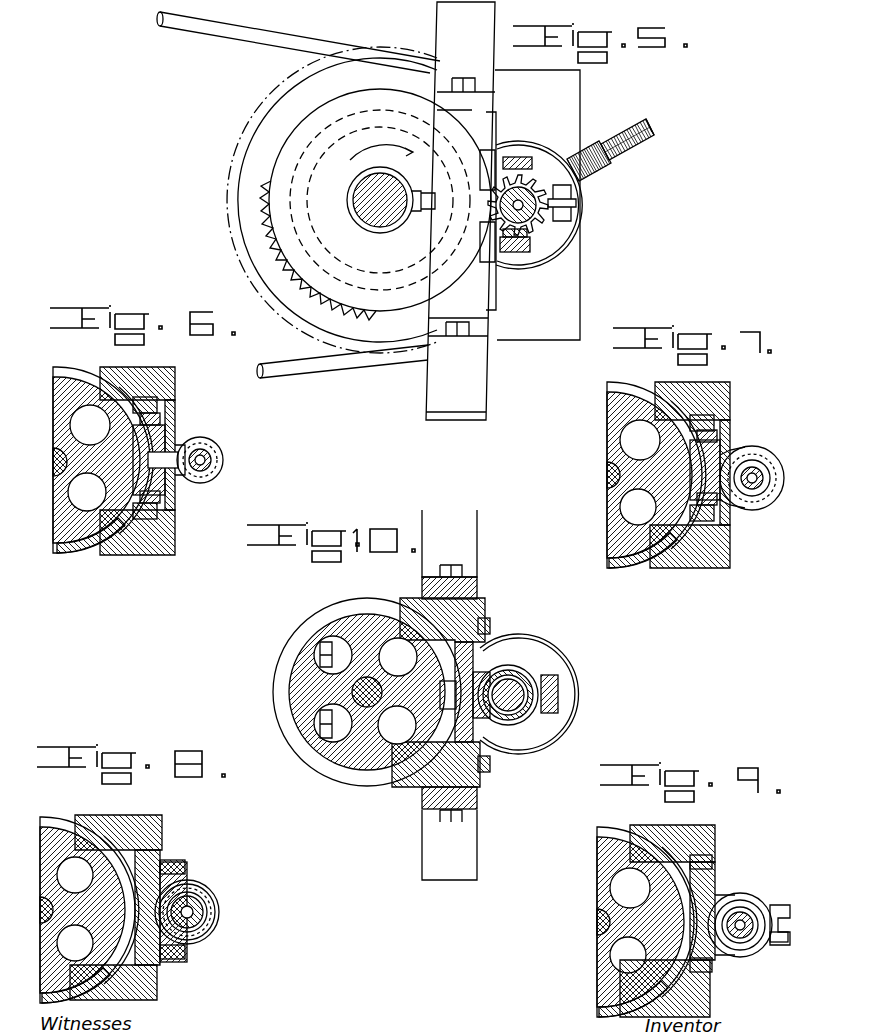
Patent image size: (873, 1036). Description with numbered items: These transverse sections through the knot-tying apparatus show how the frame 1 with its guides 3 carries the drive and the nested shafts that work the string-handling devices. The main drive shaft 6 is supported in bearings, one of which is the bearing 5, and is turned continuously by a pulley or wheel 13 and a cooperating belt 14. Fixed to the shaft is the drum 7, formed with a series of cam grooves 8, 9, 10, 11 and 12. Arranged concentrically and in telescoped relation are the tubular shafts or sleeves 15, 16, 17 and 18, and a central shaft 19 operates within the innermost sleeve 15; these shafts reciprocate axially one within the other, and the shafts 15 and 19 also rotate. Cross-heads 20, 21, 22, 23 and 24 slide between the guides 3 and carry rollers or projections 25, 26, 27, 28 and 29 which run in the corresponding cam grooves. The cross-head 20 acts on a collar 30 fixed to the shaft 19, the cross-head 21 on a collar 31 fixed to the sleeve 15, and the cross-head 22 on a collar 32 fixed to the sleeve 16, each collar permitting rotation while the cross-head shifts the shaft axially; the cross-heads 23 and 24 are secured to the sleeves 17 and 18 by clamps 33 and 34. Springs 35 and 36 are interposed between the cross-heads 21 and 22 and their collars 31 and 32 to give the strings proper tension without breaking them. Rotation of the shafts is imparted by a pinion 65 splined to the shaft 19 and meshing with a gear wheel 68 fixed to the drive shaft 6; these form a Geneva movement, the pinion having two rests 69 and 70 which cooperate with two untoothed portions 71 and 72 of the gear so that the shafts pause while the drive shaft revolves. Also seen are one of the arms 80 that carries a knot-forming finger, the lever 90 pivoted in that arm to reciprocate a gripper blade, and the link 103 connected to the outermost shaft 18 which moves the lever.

In FIG. 5, the frame 1 is at (482, 92).
In FIG. 6, the frame 1 is at (150, 368).
In FIG. 7, the frame 1 is at (712, 393).
In FIG. 10, the frame 1 is at (465, 548).
In FIG. 8, the frame 1 is at (130, 822).
In FIG. 9, the frame 1 is at (660, 833).
In FIG. 5, the guides 3 is at (497, 130).
In FIG. 6, the guides 3 is at (130, 412).
In FIG. 7, the guides 3 is at (688, 475).
In FIG. 10, the guides 3 is at (485, 615).
In FIG. 8, the guides 3 is at (165, 838).
In FIG. 9, the guides 3 is at (690, 850).
In FIG. 10, the bearing 5 is at (338, 722).
In FIG. 5, the main drive shaft 6 is at (362, 222).
In FIG. 6, the main drive shaft 6 is at (57, 462).
In FIG. 7, the main drive shaft 6 is at (607, 478).
In FIG. 10, the main drive shaft 6 is at (355, 690).
In FIG. 8, the main drive shaft 6 is at (47, 912).
In FIG. 9, the main drive shaft 6 is at (597, 928).
In FIG. 5, the drum 7 is at (312, 150).
In FIG. 6, the drum 7 is at (72, 378).
In FIG. 7, the drum 7 is at (625, 420).
In FIG. 10, the drum 7 is at (300, 688).
In FIG. 8, the drum 7 is at (60, 852).
In FIG. 9, the drum 7 is at (610, 872).
In FIG. 6, the cam groove 8 is at (60, 372).
In FIG. 7, the cam groove 9 is at (625, 393).
In FIG. 8, the cam groove 10 is at (52, 820).
In FIG. 9, the cam groove 11 is at (612, 835).
In FIG. 10, the cam groove 12 is at (320, 620).
In FIG. 5, the pulley or wheel 13 is at (250, 170).
In FIG. 5, the belt 14 is at (240, 35).
In FIG. 7, the tubular shaft or sleeve 15 is at (755, 475).
In FIG. 10, the tubular shaft or sleeve 15 is at (560, 712).
In FIG. 8, the tubular shaft or sleeve 15 is at (218, 925).
In FIG. 9, the tubular shaft or sleeve 15 is at (755, 957).
In FIG. 10, the hollow shaft or sleeve 16 is at (535, 697).
In FIG. 8, the hollow shaft or sleeve 16 is at (222, 905).
In FIG. 9, the hollow shaft or sleeve 16 is at (758, 950).
In FIG. 10, the hollow shaft or sleeve 17 is at (525, 680).
In FIG. 9, the hollow shaft or sleeve 17 is at (768, 950).
In FIG. 10, the tubular shaft or sleeve 18 is at (530, 688).
In FIG. 6, the central shaft 19 is at (205, 455).
In FIG. 7, the central shaft 19 is at (760, 497).
In FIG. 10, the central shaft 19 is at (530, 735).
In FIG. 8, the central shaft 19 is at (205, 940).
In FIG. 9, the central shaft 19 is at (742, 938).
In FIG. 5, the cross-head 20 is at (520, 195).
In FIG. 6, the cross-head 20 is at (178, 440).
In FIG. 5, the cross-head 21 is at (507, 157).
In FIG. 6, the cross-head 21 is at (163, 418).
In FIG. 7, the cross-head 21 is at (725, 442).
In FIG. 5, the cross-head 22 is at (488, 160).
In FIG. 6, the cross-head 22 is at (160, 402).
In FIG. 7, the cross-head 22 is at (730, 405).
In FIG. 8, the cross-head 22 is at (180, 862).
In FIG. 9, the cross-head 23 is at (745, 905).
In FIG. 10, the cross-head 24 is at (490, 628).
In FIG. 9, the cross-head 24 is at (712, 878).
In FIG. 6, the roller or projection 25 is at (182, 473).
In FIG. 7, the roller or projection 26 is at (638, 507).
In FIG. 8, the roller or projection 27 is at (75, 875).
In FIG. 9, the roller or projection 28 is at (630, 888).
In FIG. 10, the roller or projection 29 is at (440, 672).
In FIG. 6, the collar 30 is at (220, 462).
In FIG. 7, the collar 31 is at (775, 470).
In FIG. 8, the collar 32 is at (210, 895).
In FIG. 5, the clamp 33 is at (572, 205).
In FIG. 9, the clamp 33 is at (775, 915).
In FIG. 10, the clamp 34 is at (558, 700).
In FIG. 7, the spring 35 is at (775, 488).
In FIG. 8, the spring 36 is at (222, 913).
In FIG. 5, the pinion 65 is at (555, 215).
In FIG. 5, the gear wheel 68 is at (372, 200).
In FIG. 5, the rest 69 is at (500, 208).
In FIG. 5, the rest 70 is at (560, 157).
In FIG. 5, the untoothed portion 71 is at (364, 91).
In FIG. 5, the untoothed portion 72 is at (288, 232).
In FIG. 5, the arm 80 is at (618, 158).
In FIG. 5, the lever 90 is at (652, 128).
In FIG. 5, the link 103 is at (590, 160).